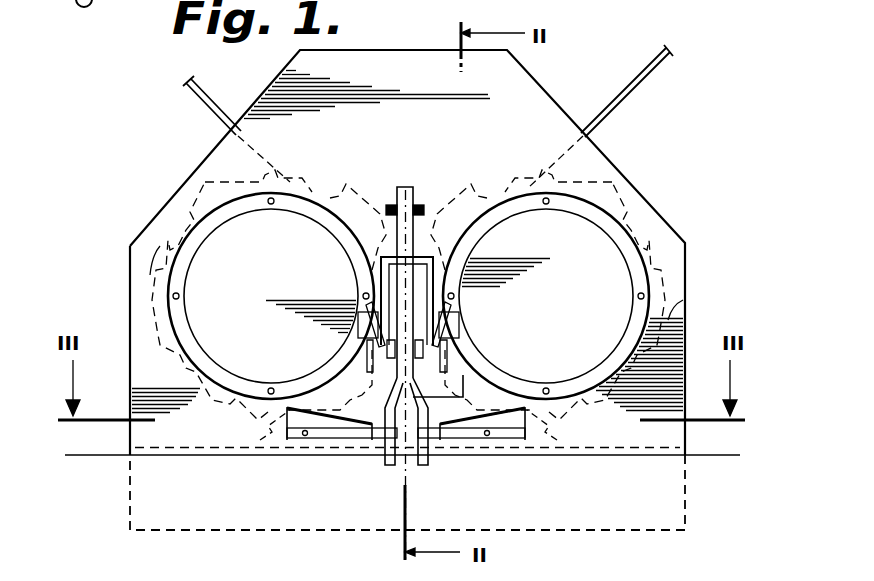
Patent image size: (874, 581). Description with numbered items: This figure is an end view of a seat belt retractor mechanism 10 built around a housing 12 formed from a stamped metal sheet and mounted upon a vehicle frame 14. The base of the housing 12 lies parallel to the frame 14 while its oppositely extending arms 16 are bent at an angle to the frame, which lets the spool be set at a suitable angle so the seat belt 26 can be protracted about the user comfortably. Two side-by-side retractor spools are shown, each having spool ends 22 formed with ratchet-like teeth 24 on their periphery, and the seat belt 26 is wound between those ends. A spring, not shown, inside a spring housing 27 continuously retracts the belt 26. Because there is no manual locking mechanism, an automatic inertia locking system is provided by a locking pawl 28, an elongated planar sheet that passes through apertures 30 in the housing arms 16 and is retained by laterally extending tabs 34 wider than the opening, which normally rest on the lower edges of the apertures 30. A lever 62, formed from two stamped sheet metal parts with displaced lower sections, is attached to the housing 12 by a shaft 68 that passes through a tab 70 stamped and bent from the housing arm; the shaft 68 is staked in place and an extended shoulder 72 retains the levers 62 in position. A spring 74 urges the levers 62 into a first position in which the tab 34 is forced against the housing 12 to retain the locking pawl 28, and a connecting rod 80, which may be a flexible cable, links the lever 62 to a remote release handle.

The seat belt retractor mechanism 10 is at (652, 155).
The housing 12 is at (650, 212).
The vehicle frame 14 is at (95, 452).
The arms 16 is at (407, 65).
The spool ends 22 is at (188, 206).
The ratchet-like teeth 24 is at (160, 246).
The seat belt 26 is at (193, 106).
The spring housing 27 is at (408, 296).
The locking pawl 28 is at (346, 438).
The apertures 30 is at (306, 437).
The tabs 34 is at (265, 434).
The lever 62 is at (415, 188).
The shaft 68 is at (452, 320).
The tab 70 is at (463, 350).
The extended shoulder 72 is at (398, 302).
The spring 74 is at (380, 270).
The connecting rod 80 is at (392, 206).